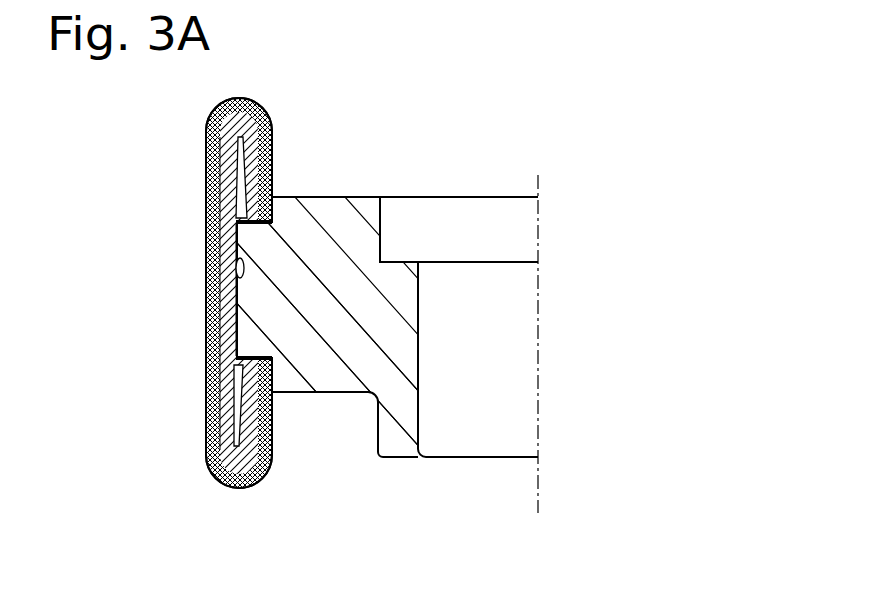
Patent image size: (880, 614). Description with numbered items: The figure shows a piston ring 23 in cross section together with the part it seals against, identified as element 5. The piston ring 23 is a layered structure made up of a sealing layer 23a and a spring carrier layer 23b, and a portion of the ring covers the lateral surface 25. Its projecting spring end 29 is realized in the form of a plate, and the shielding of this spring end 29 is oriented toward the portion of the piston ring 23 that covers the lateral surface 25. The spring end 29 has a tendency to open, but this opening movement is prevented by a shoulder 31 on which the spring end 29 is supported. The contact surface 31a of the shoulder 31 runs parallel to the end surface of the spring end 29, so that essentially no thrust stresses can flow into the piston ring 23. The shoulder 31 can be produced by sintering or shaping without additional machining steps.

The frame plate 5 is at (466, 177).
The piston ring 23 is at (178, 259).
The sealing layer 23a is at (246, 90).
The spring carrier layer 23b is at (206, 362).
The lateral surface 25 is at (236, 250).
The spring end 29 is at (361, 298).
The shoulder 31 is at (275, 245).
The contact surface 31a is at (255, 346).